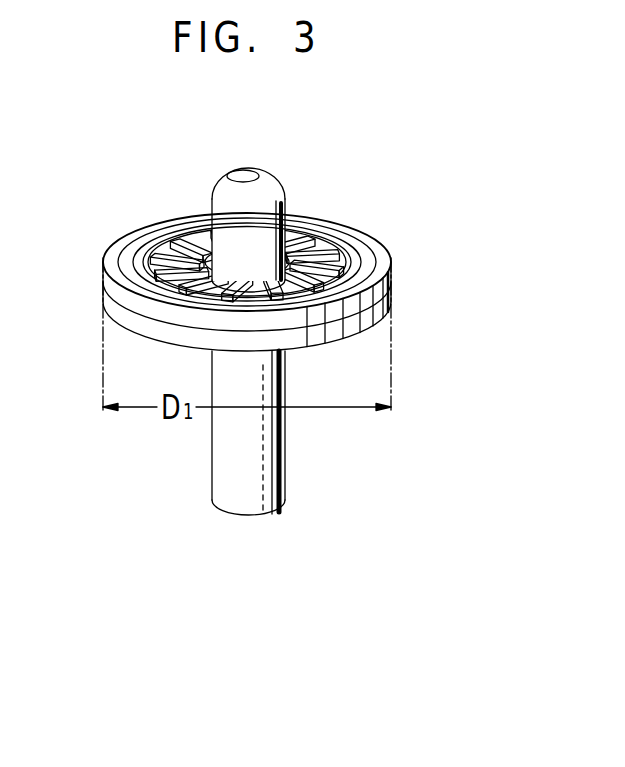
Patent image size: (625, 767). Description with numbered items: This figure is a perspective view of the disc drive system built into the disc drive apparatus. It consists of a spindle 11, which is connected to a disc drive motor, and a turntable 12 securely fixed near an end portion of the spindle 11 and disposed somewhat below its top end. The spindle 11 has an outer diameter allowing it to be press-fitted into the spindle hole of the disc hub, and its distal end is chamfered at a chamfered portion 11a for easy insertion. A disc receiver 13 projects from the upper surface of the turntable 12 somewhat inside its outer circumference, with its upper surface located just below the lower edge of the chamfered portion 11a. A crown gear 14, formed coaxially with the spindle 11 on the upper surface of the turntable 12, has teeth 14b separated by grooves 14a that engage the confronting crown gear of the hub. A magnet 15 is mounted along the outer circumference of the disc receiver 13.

The spindle 11 is at (218, 478).
The chamfered portion 11a is at (273, 186).
The turntable 12 is at (125, 328).
The disc receiver 13 is at (343, 234).
The crown gear 14 is at (211, 212).
The grooves between the teeth of the crown gear 14a is at (183, 243).
The teeth of the crown gear 14b is at (172, 246).
The magnet 15 is at (378, 258).